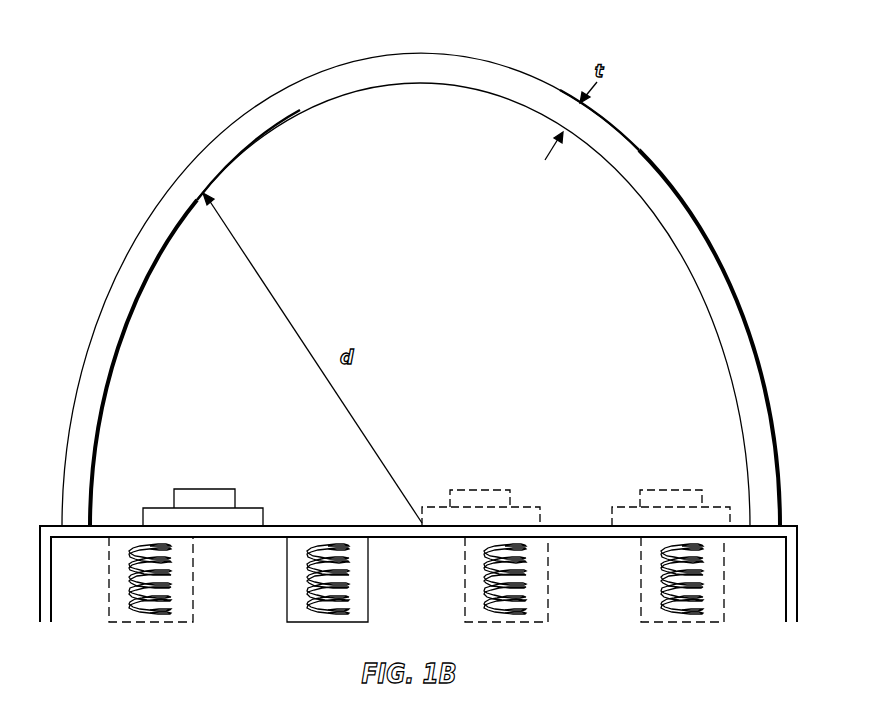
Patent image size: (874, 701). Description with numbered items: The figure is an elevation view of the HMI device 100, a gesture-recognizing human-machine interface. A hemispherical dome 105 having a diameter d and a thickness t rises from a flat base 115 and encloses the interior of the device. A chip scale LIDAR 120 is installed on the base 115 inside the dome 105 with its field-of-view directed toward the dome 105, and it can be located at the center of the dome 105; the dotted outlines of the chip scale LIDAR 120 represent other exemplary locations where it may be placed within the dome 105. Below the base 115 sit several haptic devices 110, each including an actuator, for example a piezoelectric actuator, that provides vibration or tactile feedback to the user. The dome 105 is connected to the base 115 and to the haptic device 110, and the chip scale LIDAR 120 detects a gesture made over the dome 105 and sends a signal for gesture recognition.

The HMI device 100 is at (705, 122).
The dome 105 is at (693, 222).
The haptic device 110 is at (291, 600).
The base 115 is at (797, 555).
The chip scale LIDAR 120 is at (222, 489).